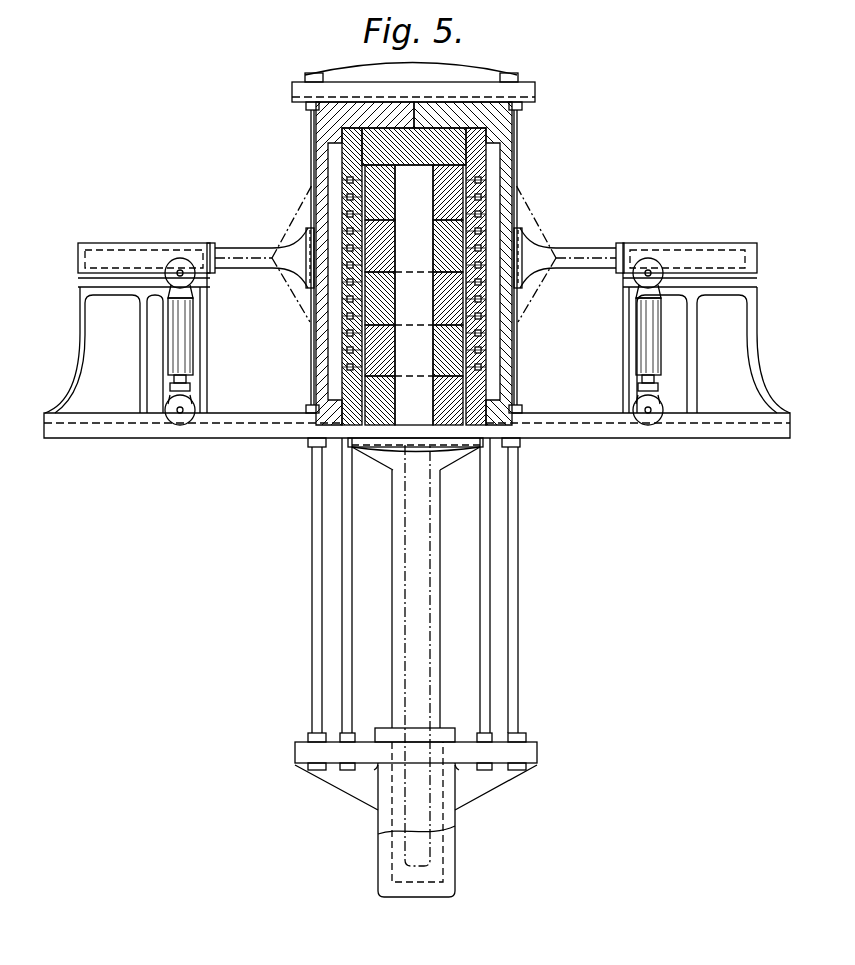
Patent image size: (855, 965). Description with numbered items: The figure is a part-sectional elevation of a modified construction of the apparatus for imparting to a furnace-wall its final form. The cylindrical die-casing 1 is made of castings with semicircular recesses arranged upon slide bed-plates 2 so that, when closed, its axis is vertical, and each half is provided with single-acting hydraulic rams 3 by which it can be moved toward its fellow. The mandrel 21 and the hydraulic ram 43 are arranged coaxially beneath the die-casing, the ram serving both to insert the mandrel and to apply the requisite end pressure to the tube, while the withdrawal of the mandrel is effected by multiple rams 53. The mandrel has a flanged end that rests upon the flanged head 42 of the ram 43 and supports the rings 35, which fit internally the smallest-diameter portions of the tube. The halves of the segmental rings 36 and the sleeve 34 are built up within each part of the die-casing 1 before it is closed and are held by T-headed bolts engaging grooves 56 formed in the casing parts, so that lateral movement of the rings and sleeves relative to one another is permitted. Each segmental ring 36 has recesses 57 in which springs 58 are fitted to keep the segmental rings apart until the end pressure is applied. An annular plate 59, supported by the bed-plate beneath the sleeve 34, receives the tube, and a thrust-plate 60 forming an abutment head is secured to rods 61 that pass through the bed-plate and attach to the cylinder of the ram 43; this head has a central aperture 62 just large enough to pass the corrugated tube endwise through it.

The casting of die-casing 1 is at (497, 124).
The slide bed-plate 2 is at (417, 425).
The hydraulic ram 3 is at (417, 328).
The mandrel 21 is at (414, 295).
The sleeve 34 is at (338, 414).
The ring 35 is at (437, 226).
The segmental ring 36 is at (520, 322).
The flanged head 42 is at (474, 451).
The hydraulic ram 43 is at (416, 655).
The multiple rams 53 is at (183, 337).
The groove 56 is at (333, 372).
The recess 57 is at (482, 226).
The spring 58 is at (343, 312).
The annular plate 59 is at (350, 438).
The thrust-plate 60 is at (413, 83).
The bolt or rod 61 is at (311, 138).
The central aperture 62 is at (453, 97).